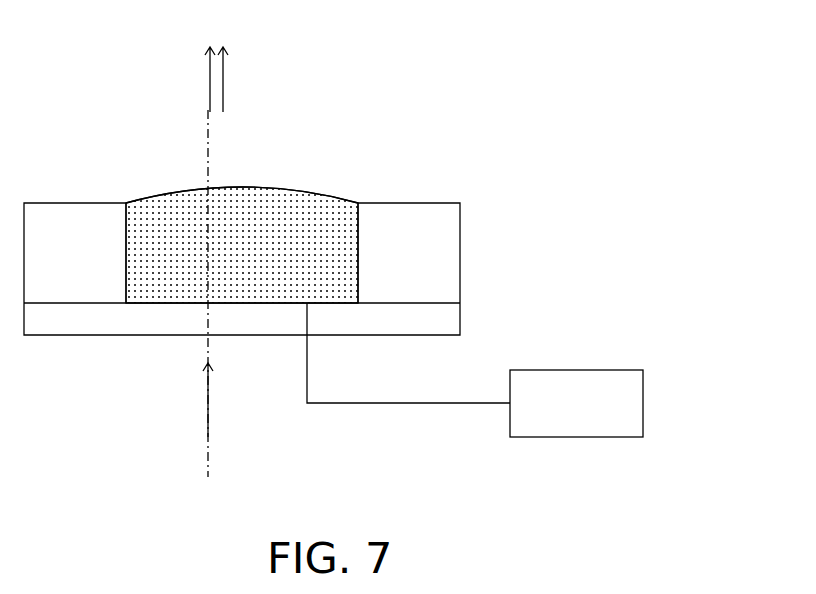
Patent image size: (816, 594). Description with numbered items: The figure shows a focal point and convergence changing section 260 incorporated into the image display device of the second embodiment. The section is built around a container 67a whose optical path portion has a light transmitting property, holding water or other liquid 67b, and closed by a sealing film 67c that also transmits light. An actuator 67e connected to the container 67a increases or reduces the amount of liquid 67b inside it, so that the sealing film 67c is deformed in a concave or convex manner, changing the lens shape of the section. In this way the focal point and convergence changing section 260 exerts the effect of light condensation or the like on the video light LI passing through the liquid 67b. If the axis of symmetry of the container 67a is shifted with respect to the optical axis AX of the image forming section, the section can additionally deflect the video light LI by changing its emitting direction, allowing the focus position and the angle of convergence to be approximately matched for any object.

The focal point and convergence changing section 260 is at (428, 128).
The container 67a is at (428, 244).
The liquid 67b is at (275, 222).
The sealing film 67c is at (243, 185).
The actuator 67e is at (610, 388).
The video light LI is at (220, 80).
The optical axis AX is at (202, 453).